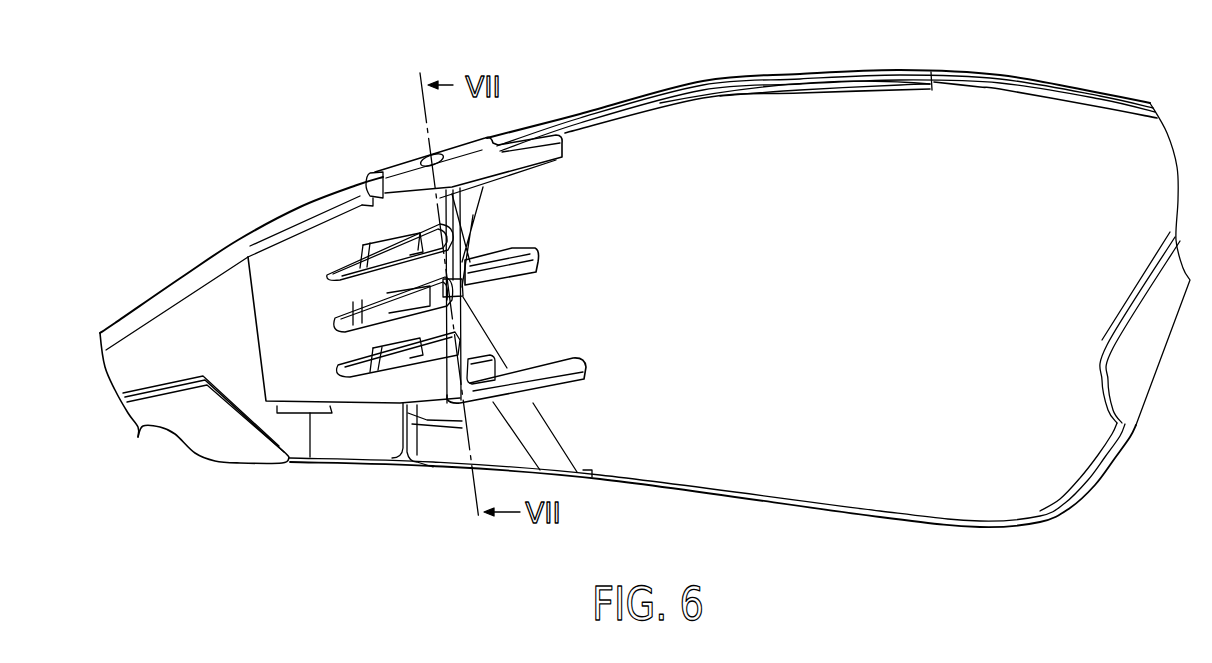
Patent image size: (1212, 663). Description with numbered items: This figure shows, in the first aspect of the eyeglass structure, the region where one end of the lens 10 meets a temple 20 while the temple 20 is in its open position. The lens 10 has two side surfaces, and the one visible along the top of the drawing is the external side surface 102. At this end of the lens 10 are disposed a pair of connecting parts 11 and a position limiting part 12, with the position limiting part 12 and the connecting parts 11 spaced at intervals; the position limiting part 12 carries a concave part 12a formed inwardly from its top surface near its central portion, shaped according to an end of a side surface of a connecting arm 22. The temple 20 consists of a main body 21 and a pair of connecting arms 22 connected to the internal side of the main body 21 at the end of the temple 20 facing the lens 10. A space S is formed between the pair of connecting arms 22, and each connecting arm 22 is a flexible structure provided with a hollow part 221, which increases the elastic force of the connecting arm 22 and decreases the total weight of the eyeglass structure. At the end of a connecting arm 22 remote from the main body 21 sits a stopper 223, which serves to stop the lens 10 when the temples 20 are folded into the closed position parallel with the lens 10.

The lens 10 is at (600, 90).
The external side surface 102 is at (703, 120).
The connecting parts 11 is at (543, 145).
The position limiting part 12 is at (527, 263).
The concave part 12a is at (463, 293).
The temple 20 is at (223, 227).
The main body 21 is at (273, 220).
The connecting arms 22 is at (317, 243).
The hollow part 221 is at (387, 247).
The stopper 223 is at (498, 362).
The space S is at (330, 321).